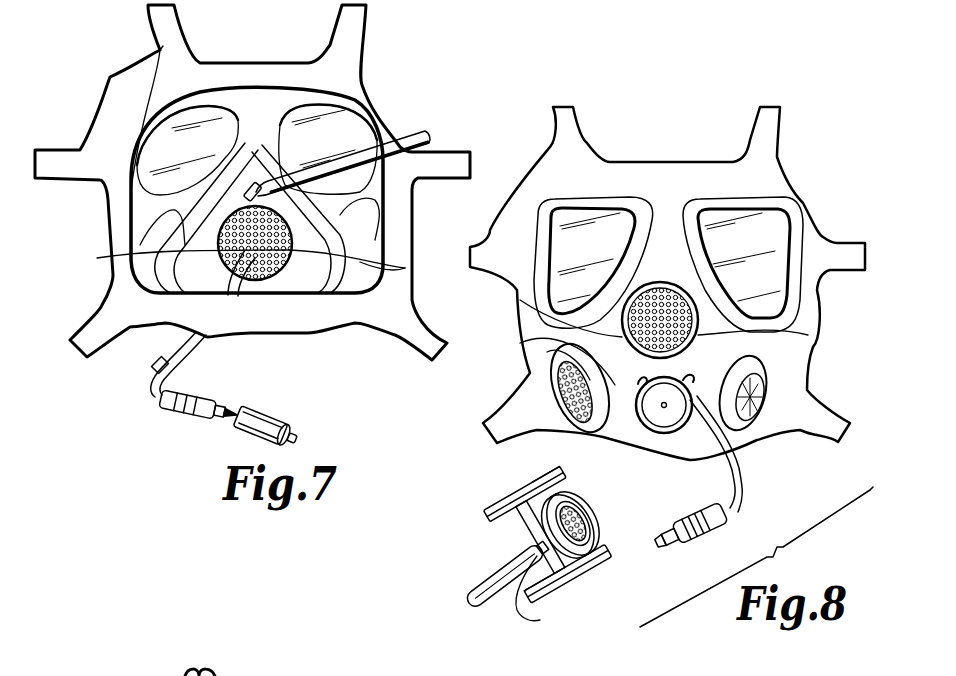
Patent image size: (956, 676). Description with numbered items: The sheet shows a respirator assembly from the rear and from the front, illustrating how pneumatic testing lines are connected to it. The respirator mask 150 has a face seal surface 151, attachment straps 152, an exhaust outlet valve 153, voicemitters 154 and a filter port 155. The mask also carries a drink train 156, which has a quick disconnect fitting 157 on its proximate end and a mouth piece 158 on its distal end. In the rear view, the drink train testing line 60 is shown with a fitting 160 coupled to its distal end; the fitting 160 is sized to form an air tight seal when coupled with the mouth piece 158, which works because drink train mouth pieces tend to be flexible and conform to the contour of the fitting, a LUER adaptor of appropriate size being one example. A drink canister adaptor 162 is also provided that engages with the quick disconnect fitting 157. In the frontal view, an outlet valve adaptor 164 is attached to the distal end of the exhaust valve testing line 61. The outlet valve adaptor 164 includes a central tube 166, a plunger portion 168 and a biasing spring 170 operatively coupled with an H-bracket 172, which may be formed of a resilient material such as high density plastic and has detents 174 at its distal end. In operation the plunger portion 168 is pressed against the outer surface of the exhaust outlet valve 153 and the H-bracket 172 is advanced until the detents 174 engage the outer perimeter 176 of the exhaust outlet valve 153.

In FIG. 7, the drink train testing line 60 is at (426, 128).
In FIG. 8, the exhaust valve testing line 61 is at (477, 590).
In FIG. 7, the respirator mask 150 is at (380, 95).
In FIG. 8, the respirator mask 150 is at (806, 200).
In FIG. 7, the face seal surface 151 is at (411, 222).
In FIG. 7, the attachment straps 152 is at (120, 71).
In FIG. 8, the attachment straps 152 is at (555, 143).
In FIG. 8, the exhaust outlet valve 153 is at (532, 357).
In FIG. 7, the voicemitters 154 is at (402, 272).
In FIG. 8, the voicemitters 154 is at (808, 328).
In FIG. 8, the filter port 155 is at (766, 393).
In FIG. 7, the drink train 156 is at (206, 358).
In FIG. 8, the drink train 156 is at (750, 461).
In FIG. 7, the quick disconnect fitting 157 is at (178, 417).
In FIG. 8, the quick disconnect fitting 157 is at (712, 542).
In FIG. 7, the mouth piece 158 is at (110, 254).
In FIG. 7, the fitting 160 is at (253, 187).
In FIG. 7, the drink canister adaptor 162 is at (270, 413).
In FIG. 8, the outlet valve adaptor 164 is at (588, 576).
In FIG. 8, the central tube 166 is at (540, 620).
In FIG. 8, the plunger portion 168 is at (595, 521).
In FIG. 8, the biasing spring 170 is at (586, 506).
In FIG. 8, the H-bracket 172 is at (506, 498).
In FIG. 8, the detents 174 is at (563, 480).
In FIG. 8, the outer perimeter 176 is at (668, 433).